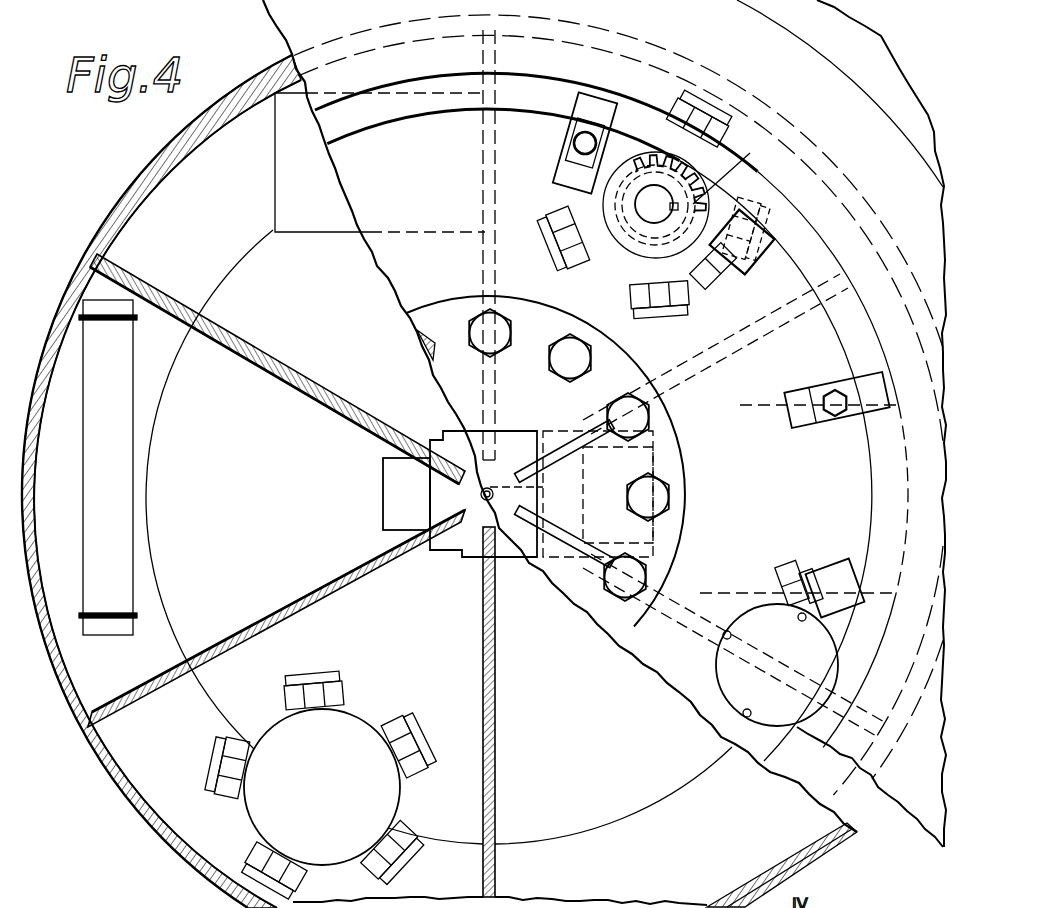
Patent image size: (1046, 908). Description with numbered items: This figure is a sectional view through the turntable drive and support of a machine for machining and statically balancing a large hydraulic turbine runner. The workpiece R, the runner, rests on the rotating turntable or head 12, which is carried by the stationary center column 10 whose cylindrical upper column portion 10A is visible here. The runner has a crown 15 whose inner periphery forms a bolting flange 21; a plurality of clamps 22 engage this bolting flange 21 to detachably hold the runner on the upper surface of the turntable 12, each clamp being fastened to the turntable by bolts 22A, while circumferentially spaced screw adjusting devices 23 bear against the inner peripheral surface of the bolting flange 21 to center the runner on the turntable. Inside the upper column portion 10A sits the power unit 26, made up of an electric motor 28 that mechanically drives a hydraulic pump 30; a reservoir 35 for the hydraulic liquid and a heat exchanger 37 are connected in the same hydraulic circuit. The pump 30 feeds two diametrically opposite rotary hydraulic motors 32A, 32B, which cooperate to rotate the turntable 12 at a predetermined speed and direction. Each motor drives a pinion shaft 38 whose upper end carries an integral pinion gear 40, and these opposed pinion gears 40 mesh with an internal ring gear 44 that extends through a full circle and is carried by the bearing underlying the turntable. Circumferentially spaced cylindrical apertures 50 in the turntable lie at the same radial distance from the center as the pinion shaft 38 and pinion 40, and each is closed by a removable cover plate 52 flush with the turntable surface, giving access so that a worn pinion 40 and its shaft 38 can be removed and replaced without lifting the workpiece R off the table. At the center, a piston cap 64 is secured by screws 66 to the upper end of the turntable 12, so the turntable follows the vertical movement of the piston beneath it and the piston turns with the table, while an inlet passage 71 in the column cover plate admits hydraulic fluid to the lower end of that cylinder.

The stationary center column 10 is at (137, 817).
The cylindrical upper column portion 10A is at (177, 843).
The rotating turntable or head 12 is at (800, 773).
The crown 15 is at (262, 8).
The bolting flange 21 is at (880, 313).
The clamps 22 is at (562, 186).
The bolts 22A is at (575, 141).
The screw adjusting devices 23 is at (753, 267).
The power unit 26 is at (562, 548).
The electric motor 28 is at (729, 407).
The hydraulic pump 30 is at (512, 557).
The rotary hydraulic motor 32A is at (363, 710).
The rotary hydraulic motor 32B is at (612, 280).
The reservoir 35 is at (326, 232).
The heat exchanger 37 is at (125, 477).
The pinion shaft 38 is at (657, 223).
The pinion gear 40 is at (732, 174).
The internal ring gear 44 is at (652, 160).
The cylindrical apertures 50 is at (606, 200).
The removable cover plate 52 is at (719, 697).
The piston cap 64 is at (683, 526).
The screws 66 is at (606, 410).
The inlet passage 71 is at (481, 494).
The workpiece R is at (906, 812).